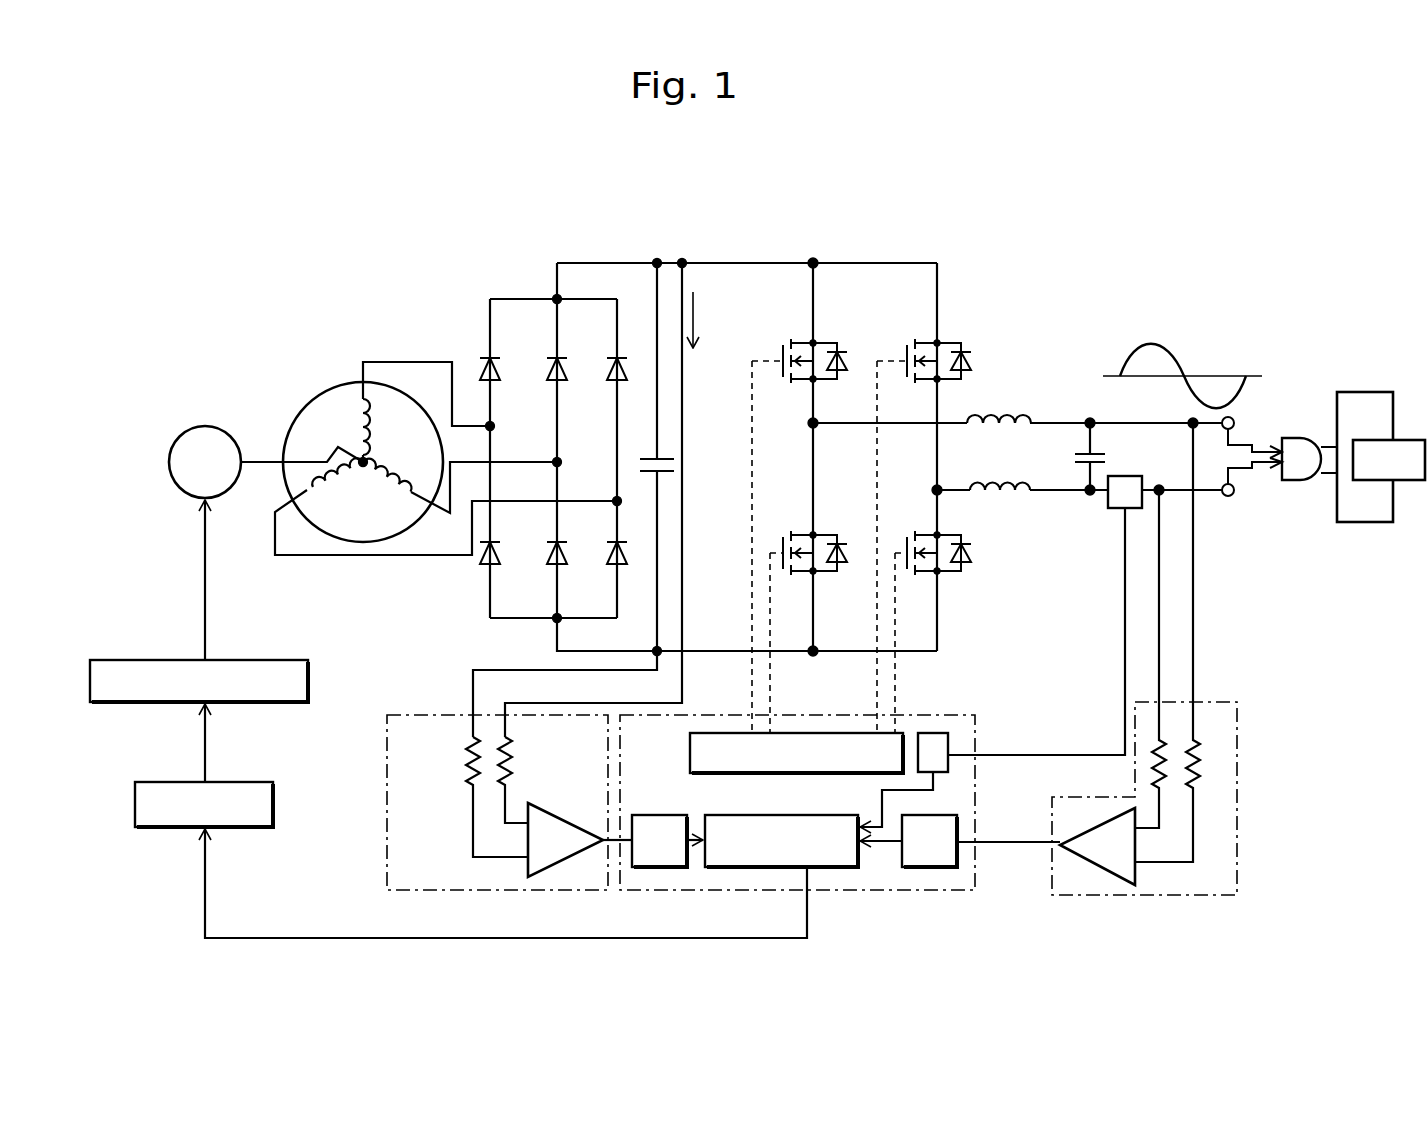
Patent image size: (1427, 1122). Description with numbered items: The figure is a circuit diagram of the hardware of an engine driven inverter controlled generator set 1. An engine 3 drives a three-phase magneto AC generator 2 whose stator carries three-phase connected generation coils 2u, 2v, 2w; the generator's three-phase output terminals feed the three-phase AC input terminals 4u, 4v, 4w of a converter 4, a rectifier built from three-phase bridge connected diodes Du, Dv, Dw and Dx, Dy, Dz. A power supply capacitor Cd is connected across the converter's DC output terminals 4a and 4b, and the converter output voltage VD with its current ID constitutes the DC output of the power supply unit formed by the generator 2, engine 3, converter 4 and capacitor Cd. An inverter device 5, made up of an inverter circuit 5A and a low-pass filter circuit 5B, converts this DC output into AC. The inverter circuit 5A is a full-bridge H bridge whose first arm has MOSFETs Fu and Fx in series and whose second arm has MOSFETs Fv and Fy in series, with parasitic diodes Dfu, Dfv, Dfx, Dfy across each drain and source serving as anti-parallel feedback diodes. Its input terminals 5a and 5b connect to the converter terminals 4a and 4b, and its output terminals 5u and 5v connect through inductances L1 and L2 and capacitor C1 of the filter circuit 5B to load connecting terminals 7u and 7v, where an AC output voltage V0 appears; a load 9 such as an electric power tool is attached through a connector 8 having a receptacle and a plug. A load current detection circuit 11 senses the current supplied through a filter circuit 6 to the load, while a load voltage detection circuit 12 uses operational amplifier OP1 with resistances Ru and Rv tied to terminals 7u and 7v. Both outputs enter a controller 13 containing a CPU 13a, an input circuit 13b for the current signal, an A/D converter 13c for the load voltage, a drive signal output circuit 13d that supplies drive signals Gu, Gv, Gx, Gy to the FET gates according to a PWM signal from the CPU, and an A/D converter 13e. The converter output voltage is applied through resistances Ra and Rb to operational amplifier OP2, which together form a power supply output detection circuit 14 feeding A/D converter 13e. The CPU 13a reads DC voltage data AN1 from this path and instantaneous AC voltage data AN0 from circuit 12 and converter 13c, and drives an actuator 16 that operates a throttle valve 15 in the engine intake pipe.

The inverter controlled generator set 1 is at (958, 240).
The three-phase magneto AC generator 2 is at (351, 438).
The generation coil 2u is at (358, 428).
The generation coil 2v is at (402, 470).
The generation coil 2w is at (343, 483).
The engine 3 is at (201, 424).
The converter 4 is at (519, 439).
The DC output terminal 4a is at (556, 298).
The DC output terminal 4b is at (555, 619).
The three-phase AC input terminal 4u is at (488, 424).
The three-phase AC input terminal 4v is at (555, 460).
The three-phase AC input terminal 4w is at (615, 500).
The inverter device 5 is at (997, 279).
The inverter circuit 5A is at (858, 462).
The low-pass filter circuit 5B is at (1058, 387).
The input terminal 5a is at (713, 263).
The input terminal 5b is at (784, 657).
The output terminal 5u is at (810, 423).
The output terminal 5v is at (935, 490).
The filter circuit 6 is at (1069, 417).
The load connecting terminal 7u is at (1233, 418).
The load connecting terminal 7v is at (1228, 497).
The connector 8 is at (1297, 482).
The load 9 is at (1408, 482).
The load current detection circuit 11 is at (1107, 499).
The load voltage detection circuit 12 is at (1150, 659).
The controller 13 is at (815, 806).
The CPU 13a is at (766, 868).
The input circuit 13b is at (932, 733).
The A/D converter 13c is at (959, 815).
The drive signal output circuit 13d is at (689, 752).
The A/D converter 13e is at (660, 868).
The power supply output detection circuit 14 is at (497, 762).
The throttle valve 15 is at (250, 658).
The actuator 16 is at (253, 780).
The diode Du is at (483, 357).
The diode Dv is at (550, 360).
The diode Dw is at (611, 360).
The diode Dx is at (478, 556).
The diode Dy is at (548, 556).
The diode Dz is at (612, 556).
The MOSFET Fu is at (803, 343).
The MOSFET Fv is at (928, 343).
The MOSFET Fx is at (803, 535).
The MOSFET Fy is at (929, 535).
The parasitic diode Dfu is at (839, 351).
The parasitic diode Dfv is at (963, 351).
The parasitic diode Dfx is at (845, 553).
The parasitic diode Dfy is at (967, 553).
The drive signal Gu is at (761, 531).
The drive signal Gv is at (887, 532).
The drive signal Gx is at (789, 643).
The drive signal Gy is at (913, 643).
The inductance L1 is at (997, 418).
The inductance L2 is at (972, 489).
The capacitor C1 is at (1107, 458).
The power supply capacitor Cd is at (675, 466).
The DC voltage VD is at (661, 249).
The DC current ID is at (708, 320).
The output voltage V0 is at (1160, 343).
The resistance Ra is at (512, 770).
The resistance Rb is at (466, 768).
The resistance Ru is at (1200, 762).
The resistance Rv is at (1153, 758).
The operational amplifier OP1 is at (1097, 846).
The operational amplifier OP2 is at (565, 840).
The instantaneous data AN0 is at (1008, 827).
The data of DC output voltage AN1 is at (603, 838).